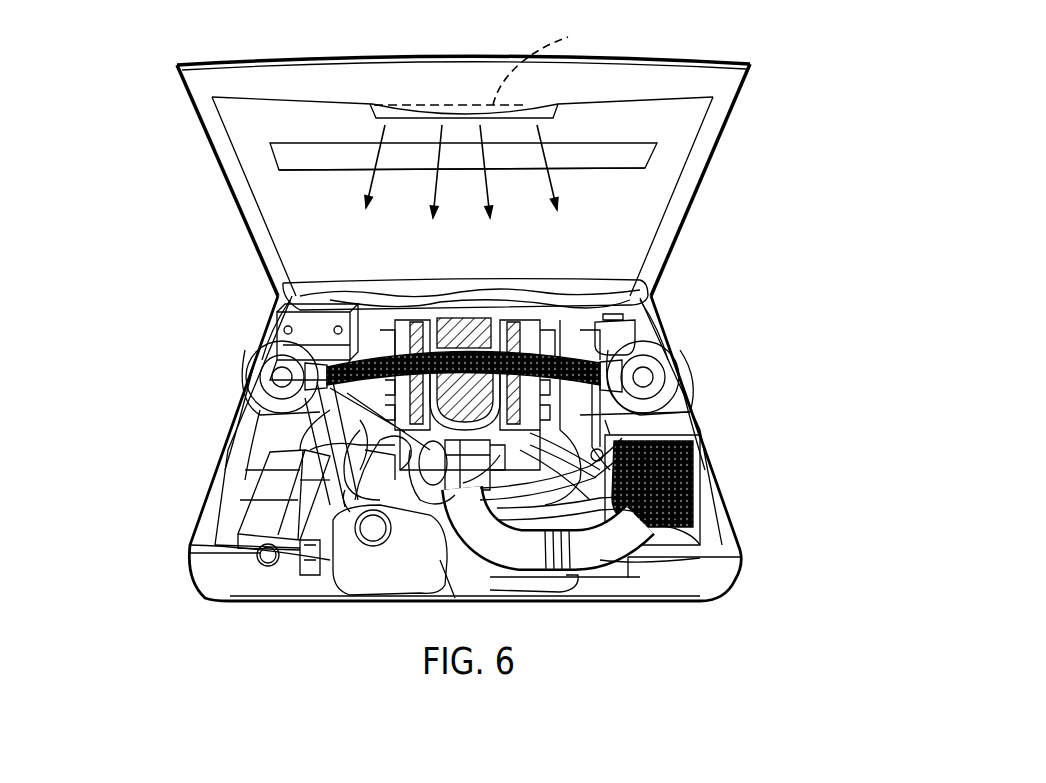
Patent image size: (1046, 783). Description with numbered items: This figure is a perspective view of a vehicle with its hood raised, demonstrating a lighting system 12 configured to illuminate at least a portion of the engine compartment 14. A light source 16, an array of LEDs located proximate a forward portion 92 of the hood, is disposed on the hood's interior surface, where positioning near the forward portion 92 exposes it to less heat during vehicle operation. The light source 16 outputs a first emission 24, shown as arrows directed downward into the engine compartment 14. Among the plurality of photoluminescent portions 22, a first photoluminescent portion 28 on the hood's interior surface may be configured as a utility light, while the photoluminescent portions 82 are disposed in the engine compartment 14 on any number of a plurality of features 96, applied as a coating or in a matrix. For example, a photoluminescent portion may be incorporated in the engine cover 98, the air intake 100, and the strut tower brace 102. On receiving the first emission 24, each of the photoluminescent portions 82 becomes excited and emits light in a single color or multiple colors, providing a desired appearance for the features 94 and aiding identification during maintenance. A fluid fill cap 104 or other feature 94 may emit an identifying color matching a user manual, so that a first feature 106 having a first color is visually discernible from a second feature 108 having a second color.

The lighting system 12 is at (190, 153).
The engine compartment 14 is at (183, 372).
The light source 16 is at (487, 64).
The plurality of photoluminescent portions 22 is at (660, 145).
The first emission 24 is at (432, 193).
The first photoluminescent portion 28 is at (645, 165).
The photoluminescent portions 82 is at (655, 280).
The forward portion 92 is at (408, 92).
The features 94 is at (322, 300).
The plurality of features 96 is at (310, 328).
The engine cover 98 is at (390, 412).
The air intake 100 is at (683, 482).
The strut tower brace 102 is at (632, 360).
The fluid fill cap 104 is at (284, 500).
The first feature 106 is at (258, 553).
The second feature 108 is at (330, 555).